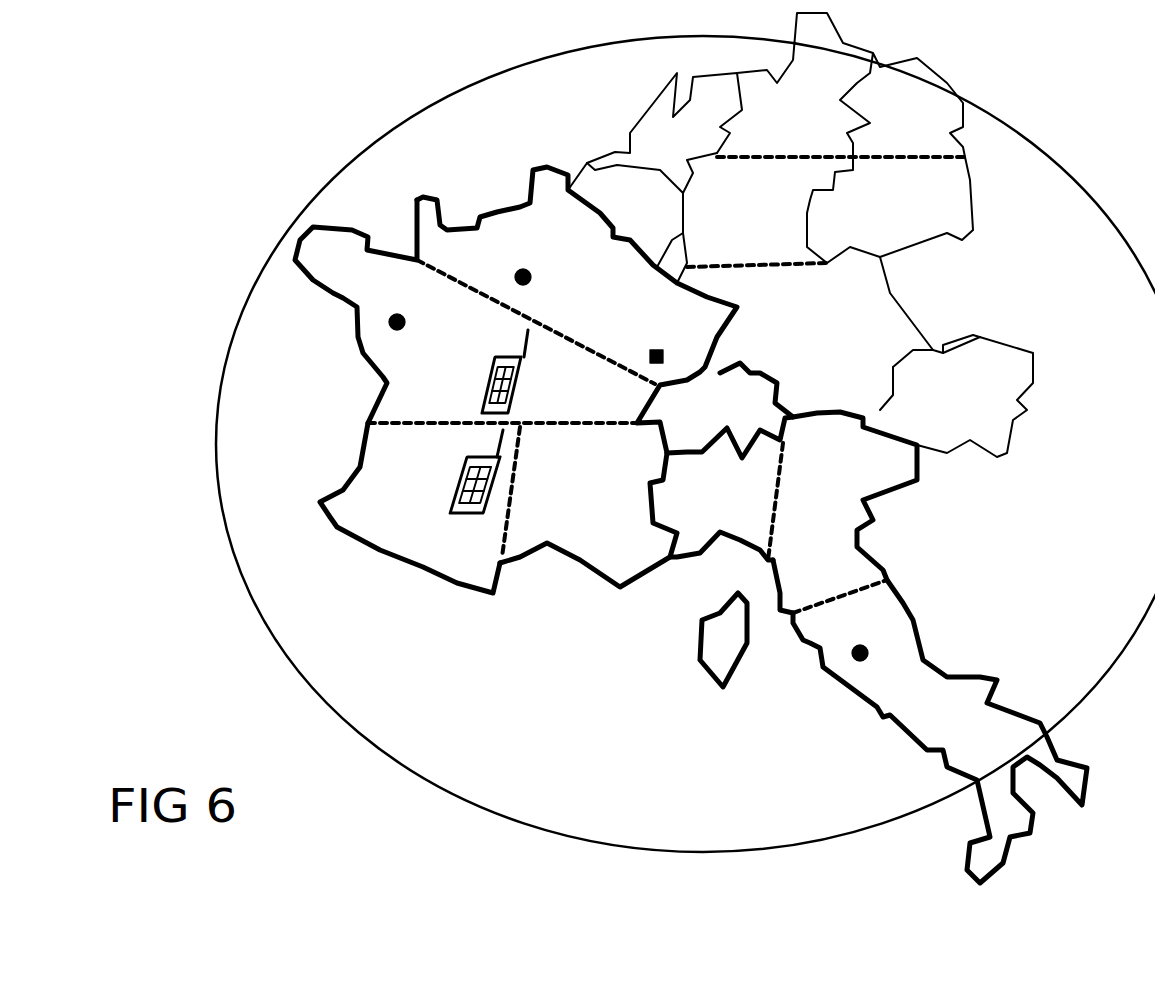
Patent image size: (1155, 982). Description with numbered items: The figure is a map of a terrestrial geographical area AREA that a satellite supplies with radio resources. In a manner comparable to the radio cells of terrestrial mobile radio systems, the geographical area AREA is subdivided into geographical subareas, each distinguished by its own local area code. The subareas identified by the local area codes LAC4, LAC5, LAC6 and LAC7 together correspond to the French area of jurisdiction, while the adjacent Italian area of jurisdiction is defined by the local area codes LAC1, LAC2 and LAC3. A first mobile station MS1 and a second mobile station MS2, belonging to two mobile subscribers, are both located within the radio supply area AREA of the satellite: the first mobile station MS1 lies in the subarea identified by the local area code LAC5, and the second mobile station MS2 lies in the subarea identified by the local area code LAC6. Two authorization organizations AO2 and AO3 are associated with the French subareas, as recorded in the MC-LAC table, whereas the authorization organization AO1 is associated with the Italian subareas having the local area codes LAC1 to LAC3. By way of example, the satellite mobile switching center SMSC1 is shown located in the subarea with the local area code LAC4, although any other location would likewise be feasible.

The geographical area AREA is at (685, 444).
The local area code LAC1 is at (730, 488).
The local area code LAC2 is at (818, 488).
The local area code LAC3 is at (940, 731).
The local area code LAC4 is at (577, 310).
The local area code LAC5 is at (475, 311).
The local area code LAC6 is at (420, 508).
The local area code LAC7 is at (588, 520).
The authorization organization AO1 is at (856, 632).
The authorization organization AO2 is at (395, 302).
The authorization organization AO3 is at (510, 257).
The satellite mobile switching center SMSC1 is at (651, 337).
The first mobile station MS1 is at (537, 372).
The second mobile station MS2 is at (465, 493).